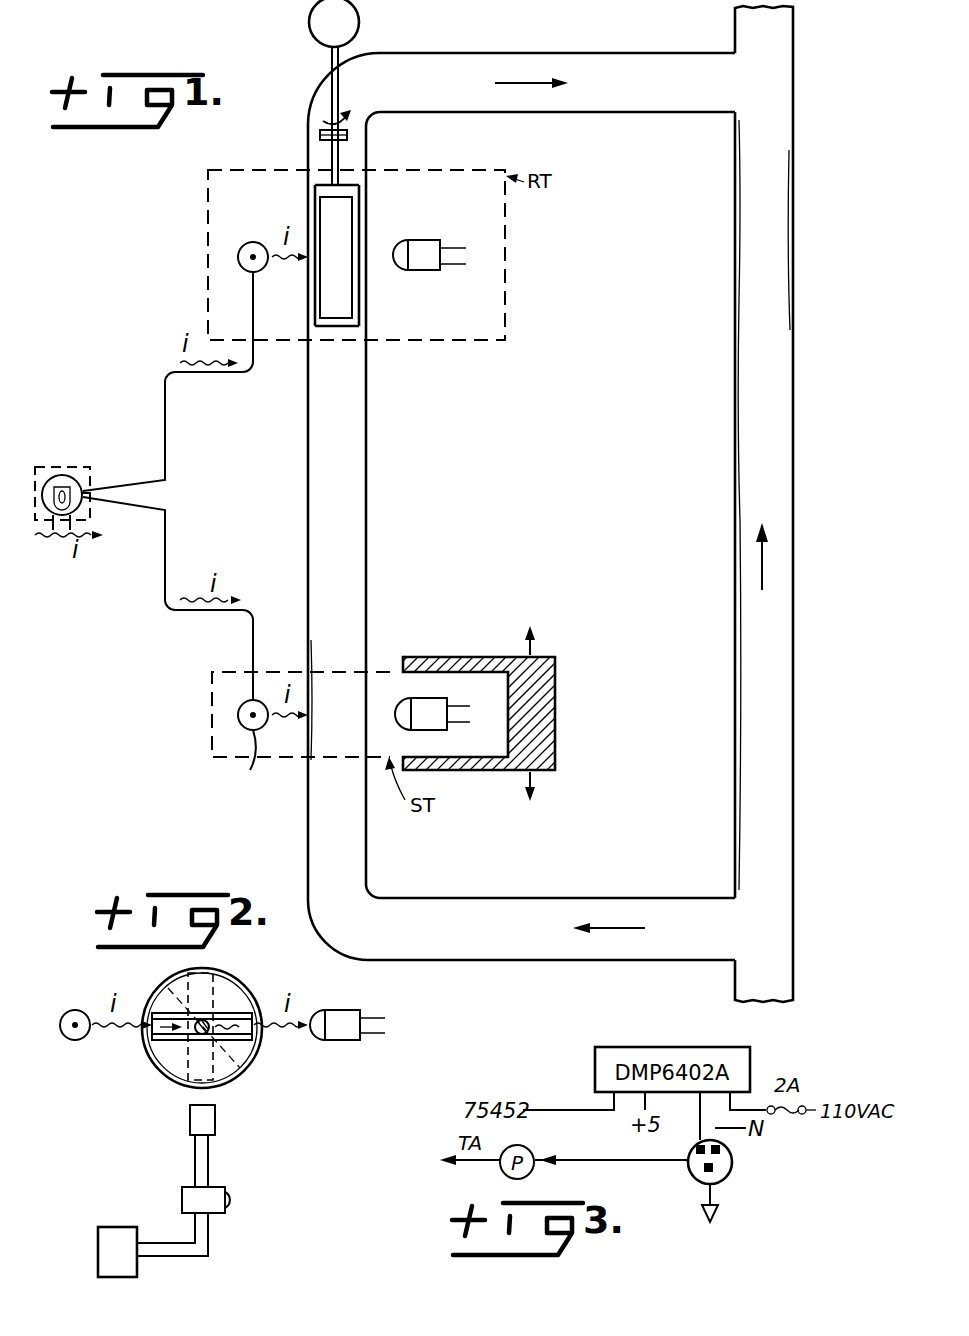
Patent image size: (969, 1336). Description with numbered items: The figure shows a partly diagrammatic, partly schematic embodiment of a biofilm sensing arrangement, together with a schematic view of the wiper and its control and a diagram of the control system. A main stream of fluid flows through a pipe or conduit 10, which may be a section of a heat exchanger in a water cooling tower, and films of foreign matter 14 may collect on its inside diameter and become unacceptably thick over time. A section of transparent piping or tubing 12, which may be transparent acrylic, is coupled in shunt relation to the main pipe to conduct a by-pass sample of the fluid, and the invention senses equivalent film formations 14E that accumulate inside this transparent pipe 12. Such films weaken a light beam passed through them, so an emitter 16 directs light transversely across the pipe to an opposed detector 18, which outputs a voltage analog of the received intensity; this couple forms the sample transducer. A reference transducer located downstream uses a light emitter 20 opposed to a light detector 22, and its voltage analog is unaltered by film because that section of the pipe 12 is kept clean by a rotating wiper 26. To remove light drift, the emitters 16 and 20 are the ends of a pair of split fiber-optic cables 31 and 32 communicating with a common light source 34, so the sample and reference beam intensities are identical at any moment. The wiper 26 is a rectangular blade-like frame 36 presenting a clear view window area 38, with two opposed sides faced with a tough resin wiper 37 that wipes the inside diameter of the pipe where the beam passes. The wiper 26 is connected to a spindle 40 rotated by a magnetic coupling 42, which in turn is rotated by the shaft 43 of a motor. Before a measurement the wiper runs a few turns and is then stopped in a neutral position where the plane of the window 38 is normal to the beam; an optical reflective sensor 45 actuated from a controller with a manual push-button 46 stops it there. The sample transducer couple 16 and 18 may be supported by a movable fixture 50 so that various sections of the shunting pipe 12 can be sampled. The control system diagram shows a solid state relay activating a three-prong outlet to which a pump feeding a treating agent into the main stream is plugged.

In FIG. 1, the pipe or conduit 10 is at (793, 420).
In FIG. 1, the transparent piping or tubing 12 is at (593, 897).
In FIG. 2, the transparent piping or tubing 12 is at (240, 980).
In FIG. 1, the films of foreign matter 14 is at (783, 222).
In FIG. 1, the equivalent film formations 14E is at (319, 696).
In FIG. 1, the emitter 16 is at (250, 770).
In FIG. 1, the detector 18 is at (422, 698).
In FIG. 1, the light emitter 20 is at (254, 234).
In FIG. 2, the light emitter 20 is at (77, 1010).
In FIG. 1, the light detector 22 is at (420, 271).
In FIG. 2, the light detector 22 is at (343, 1040).
In FIG. 1, the rotating wiper 26 is at (338, 255).
In FIG. 1, the split fiber-optic cable 31 is at (186, 615).
In FIG. 1, the split fiber-optic cable 32 is at (200, 375).
In FIG. 1, the common light source 34 is at (58, 467).
In FIG. 2, the common light source 34 is at (109, 1227).
In FIG. 1, the blade-like frame 36 is at (341, 327).
In FIG. 2, the blade-like frame 36 is at (240, 1000).
In FIG. 1, the wiper 37 is at (314, 196).
In FIG. 2, the wiper 37 is at (152, 1042).
In FIG. 1, the clear view window area 38 is at (328, 278).
In FIG. 2, the clear view window area 38 is at (168, 988).
In FIG. 1, the spindle 40 is at (331, 158).
In FIG. 2, the spindle 40 is at (197, 1035).
In FIG. 1, the magnetic coupling 42 is at (322, 131).
In FIG. 1, the shaft 43 is at (328, 58).
In FIG. 2, the optical reflective sensor 45 is at (190, 1120).
In FIG. 2, the manual push-button 46 is at (234, 1200).
In FIG. 1, the movable fixture 50 is at (556, 697).